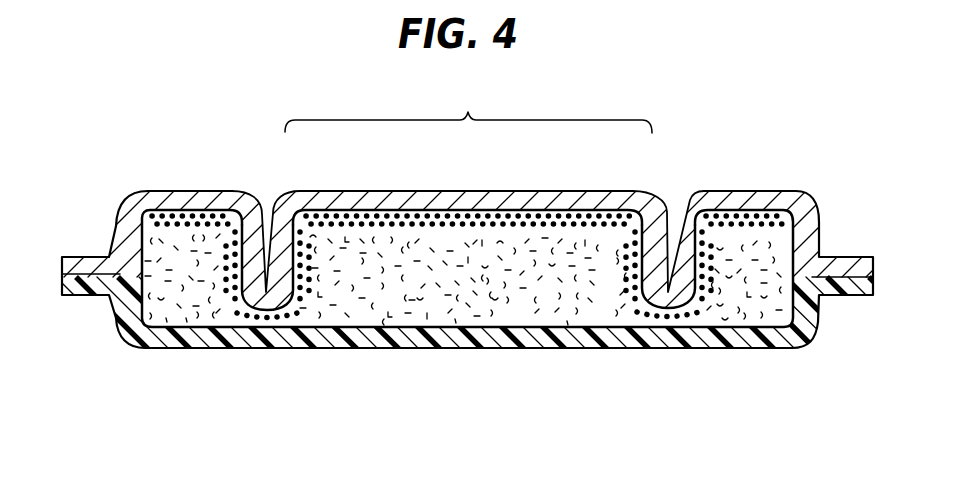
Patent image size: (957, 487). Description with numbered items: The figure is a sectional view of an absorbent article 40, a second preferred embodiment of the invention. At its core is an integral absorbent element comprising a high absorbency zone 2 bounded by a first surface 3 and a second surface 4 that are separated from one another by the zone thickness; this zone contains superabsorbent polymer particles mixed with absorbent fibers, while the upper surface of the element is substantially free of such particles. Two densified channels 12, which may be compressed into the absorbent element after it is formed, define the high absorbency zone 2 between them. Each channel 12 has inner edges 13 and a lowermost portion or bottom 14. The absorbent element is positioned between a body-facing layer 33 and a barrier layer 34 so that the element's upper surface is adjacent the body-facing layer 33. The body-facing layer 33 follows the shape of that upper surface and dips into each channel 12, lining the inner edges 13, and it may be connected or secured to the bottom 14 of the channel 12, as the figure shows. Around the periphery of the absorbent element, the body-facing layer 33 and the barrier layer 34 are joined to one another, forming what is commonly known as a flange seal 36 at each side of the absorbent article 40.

The absorbent article 40 is at (724, 91).
The high absorbency zone 2 is at (468, 110).
The first surface 3 is at (590, 213).
The second surface 4 is at (602, 233).
The densified channel 12 is at (667, 204).
The inner edges 13 is at (300, 228).
The bottom 14 is at (270, 311).
The body-facing layer 33 is at (462, 190).
The barrier layer 34 is at (395, 349).
The flange seal 36 is at (60, 274).